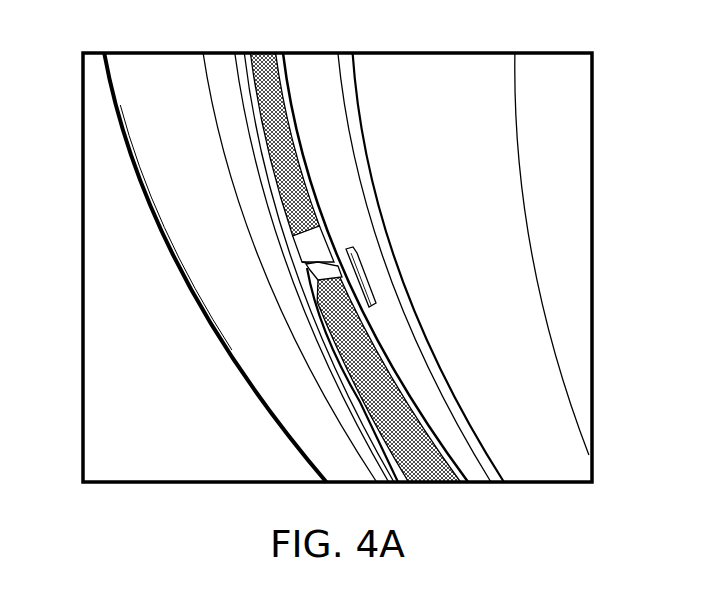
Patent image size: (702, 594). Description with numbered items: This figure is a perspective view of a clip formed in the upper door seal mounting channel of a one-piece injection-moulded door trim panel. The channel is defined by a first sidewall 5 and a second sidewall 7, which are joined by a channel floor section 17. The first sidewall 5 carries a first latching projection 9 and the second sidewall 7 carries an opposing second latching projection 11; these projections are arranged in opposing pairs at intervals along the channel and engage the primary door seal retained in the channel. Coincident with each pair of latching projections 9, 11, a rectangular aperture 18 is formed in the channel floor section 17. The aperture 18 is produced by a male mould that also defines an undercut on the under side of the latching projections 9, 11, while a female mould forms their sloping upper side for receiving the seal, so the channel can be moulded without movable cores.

The first sidewall 5 is at (402, 358).
The second sidewall 7 is at (317, 372).
The first latching projection 9 is at (362, 277).
The second latching projection 11 is at (325, 312).
The channel floor section 17 is at (283, 164).
The rectangular aperture 18 is at (310, 251).